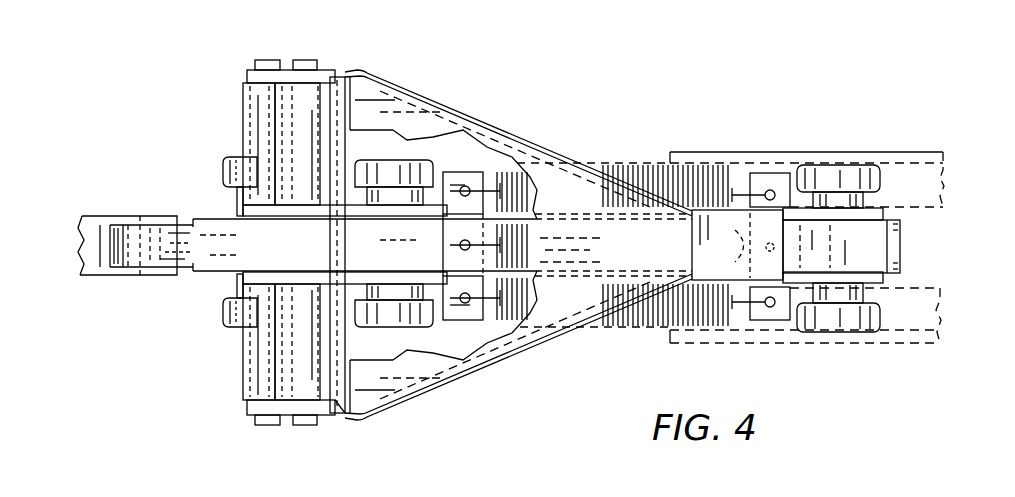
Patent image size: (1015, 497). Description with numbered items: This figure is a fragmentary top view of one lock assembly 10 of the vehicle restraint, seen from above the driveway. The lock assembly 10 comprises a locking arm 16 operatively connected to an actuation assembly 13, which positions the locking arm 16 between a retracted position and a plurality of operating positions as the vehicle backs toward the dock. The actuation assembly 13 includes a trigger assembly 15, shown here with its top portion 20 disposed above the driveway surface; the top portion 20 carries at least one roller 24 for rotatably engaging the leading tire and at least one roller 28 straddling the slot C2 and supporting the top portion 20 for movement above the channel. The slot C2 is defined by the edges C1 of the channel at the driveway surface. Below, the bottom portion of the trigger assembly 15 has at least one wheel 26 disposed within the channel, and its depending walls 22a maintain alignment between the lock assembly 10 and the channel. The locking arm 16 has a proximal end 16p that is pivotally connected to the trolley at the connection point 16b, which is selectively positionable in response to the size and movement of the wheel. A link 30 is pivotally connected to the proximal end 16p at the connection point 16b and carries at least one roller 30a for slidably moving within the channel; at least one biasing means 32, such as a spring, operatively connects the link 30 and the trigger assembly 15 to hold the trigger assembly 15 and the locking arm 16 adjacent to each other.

The lock assembly 10 is at (681, 89).
The actuation assembly 13 is at (562, 78).
The trigger assembly 15 is at (437, 97).
The locking arm 16 is at (103, 217).
The connection point 16b is at (140, 216).
The proximal end 16p is at (133, 275).
The top portion 20 is at (550, 140).
The depending walls 22a is at (880, 282).
The roller 24 is at (330, 82).
The wheel 26 is at (860, 167).
The roller 28 is at (247, 88).
The link 30 is at (208, 268).
The roller 30a is at (222, 172).
The biasing means 32 is at (637, 165).
The edges of the channel C1 is at (940, 188).
The slot C2 is at (930, 257).